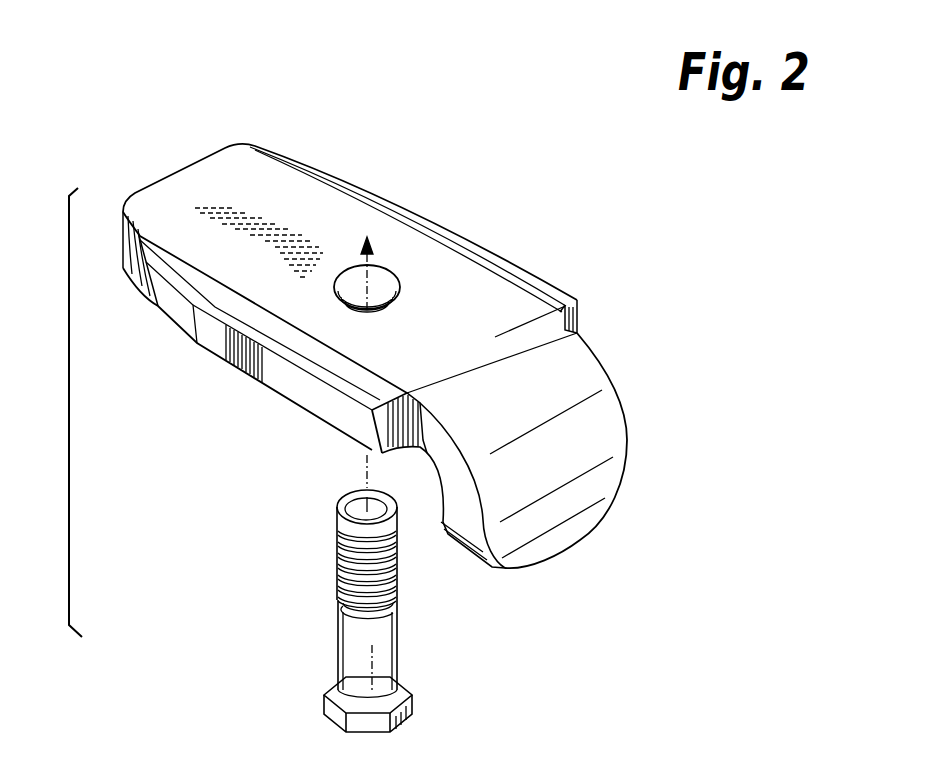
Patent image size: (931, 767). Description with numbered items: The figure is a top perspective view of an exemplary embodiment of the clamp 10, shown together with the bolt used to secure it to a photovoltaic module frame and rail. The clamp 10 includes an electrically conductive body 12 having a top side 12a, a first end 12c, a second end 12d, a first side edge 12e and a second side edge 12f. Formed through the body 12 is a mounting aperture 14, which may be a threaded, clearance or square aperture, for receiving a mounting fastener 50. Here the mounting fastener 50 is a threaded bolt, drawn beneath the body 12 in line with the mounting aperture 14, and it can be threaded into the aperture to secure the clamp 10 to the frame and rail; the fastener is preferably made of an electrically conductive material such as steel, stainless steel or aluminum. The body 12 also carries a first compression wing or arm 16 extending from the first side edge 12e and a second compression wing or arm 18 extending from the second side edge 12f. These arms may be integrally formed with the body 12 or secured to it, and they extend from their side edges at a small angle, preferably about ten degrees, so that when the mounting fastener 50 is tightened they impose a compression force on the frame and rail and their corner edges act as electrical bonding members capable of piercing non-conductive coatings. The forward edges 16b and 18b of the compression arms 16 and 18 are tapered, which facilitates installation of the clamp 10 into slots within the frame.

The clamp 10 is at (168, 125).
The electrically conductive body 12 is at (198, 153).
The top side 12a is at (250, 190).
The first end 12c is at (513, 320).
The second end 12d is at (145, 187).
The first side edge 12e is at (452, 258).
The second side edge 12f is at (343, 357).
The mounting aperture 14 is at (382, 270).
The first compression arm 16 is at (377, 183).
The forward edge of first compression arm 16b is at (322, 168).
The second compression arm 18 is at (229, 369).
The forward edge of second compression arm 18b is at (183, 304).
The mounting fastener 50 is at (332, 637).